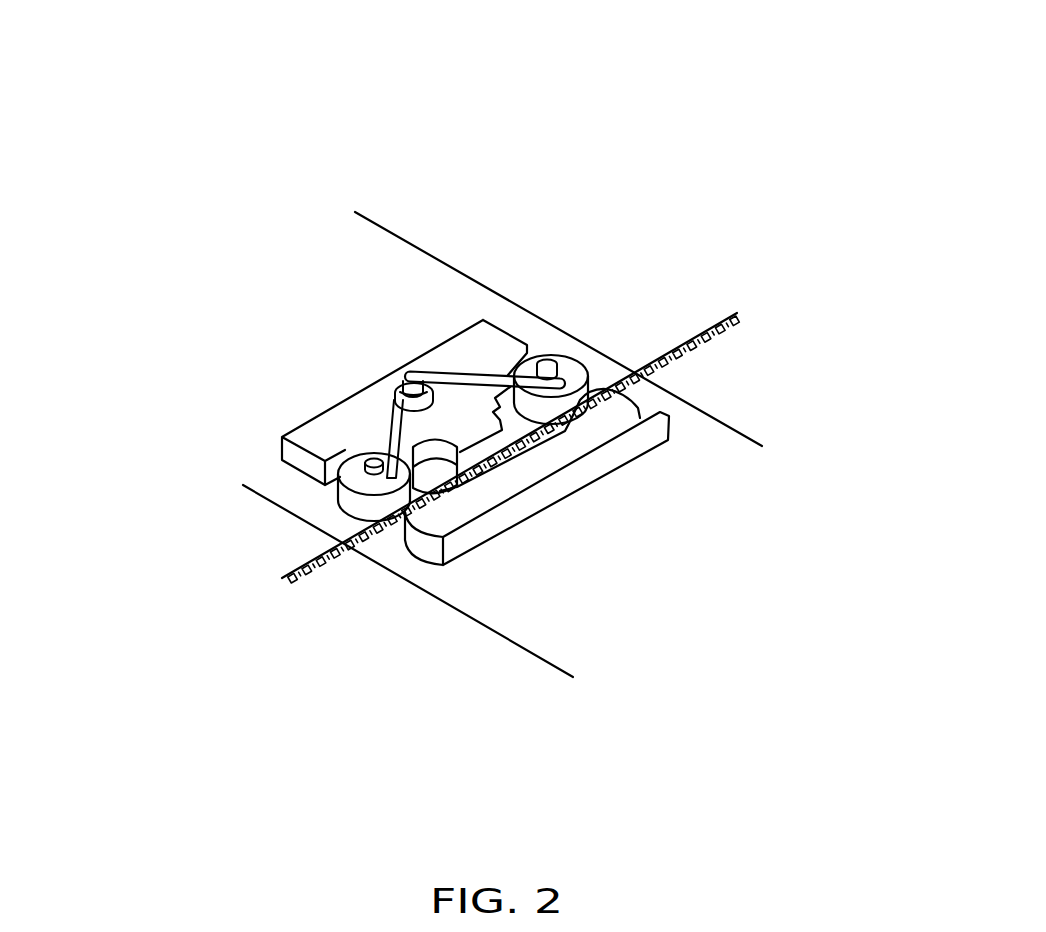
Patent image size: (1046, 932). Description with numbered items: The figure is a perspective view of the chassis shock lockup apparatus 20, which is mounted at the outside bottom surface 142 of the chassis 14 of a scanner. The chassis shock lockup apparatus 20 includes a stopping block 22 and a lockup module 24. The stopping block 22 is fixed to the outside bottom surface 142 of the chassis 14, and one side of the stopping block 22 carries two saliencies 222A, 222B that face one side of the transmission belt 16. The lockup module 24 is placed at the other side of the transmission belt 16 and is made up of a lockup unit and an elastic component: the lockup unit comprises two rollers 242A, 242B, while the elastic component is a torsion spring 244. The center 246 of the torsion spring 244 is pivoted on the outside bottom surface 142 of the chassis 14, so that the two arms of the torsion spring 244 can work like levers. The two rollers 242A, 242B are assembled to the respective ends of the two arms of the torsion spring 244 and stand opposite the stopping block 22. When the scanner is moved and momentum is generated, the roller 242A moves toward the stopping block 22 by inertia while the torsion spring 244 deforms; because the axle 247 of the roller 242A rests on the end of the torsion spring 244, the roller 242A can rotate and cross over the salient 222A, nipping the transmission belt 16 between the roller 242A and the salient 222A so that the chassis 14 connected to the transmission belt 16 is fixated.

The chassis 14 is at (460, 662).
The outside bottom surface 142 is at (707, 503).
The transmission belt 16 is at (722, 342).
The chassis shock lockup apparatus 20 is at (457, 316).
The stopping block 22 is at (638, 417).
The salient 222A is at (600, 412).
The salient 222B is at (417, 518).
The lockup module 24 is at (490, 351).
The roller 242A is at (565, 358).
The roller 242B is at (348, 475).
The torsion spring 244 is at (393, 415).
The center of the torsion spring 246 is at (408, 372).
The axle 247 is at (547, 358).